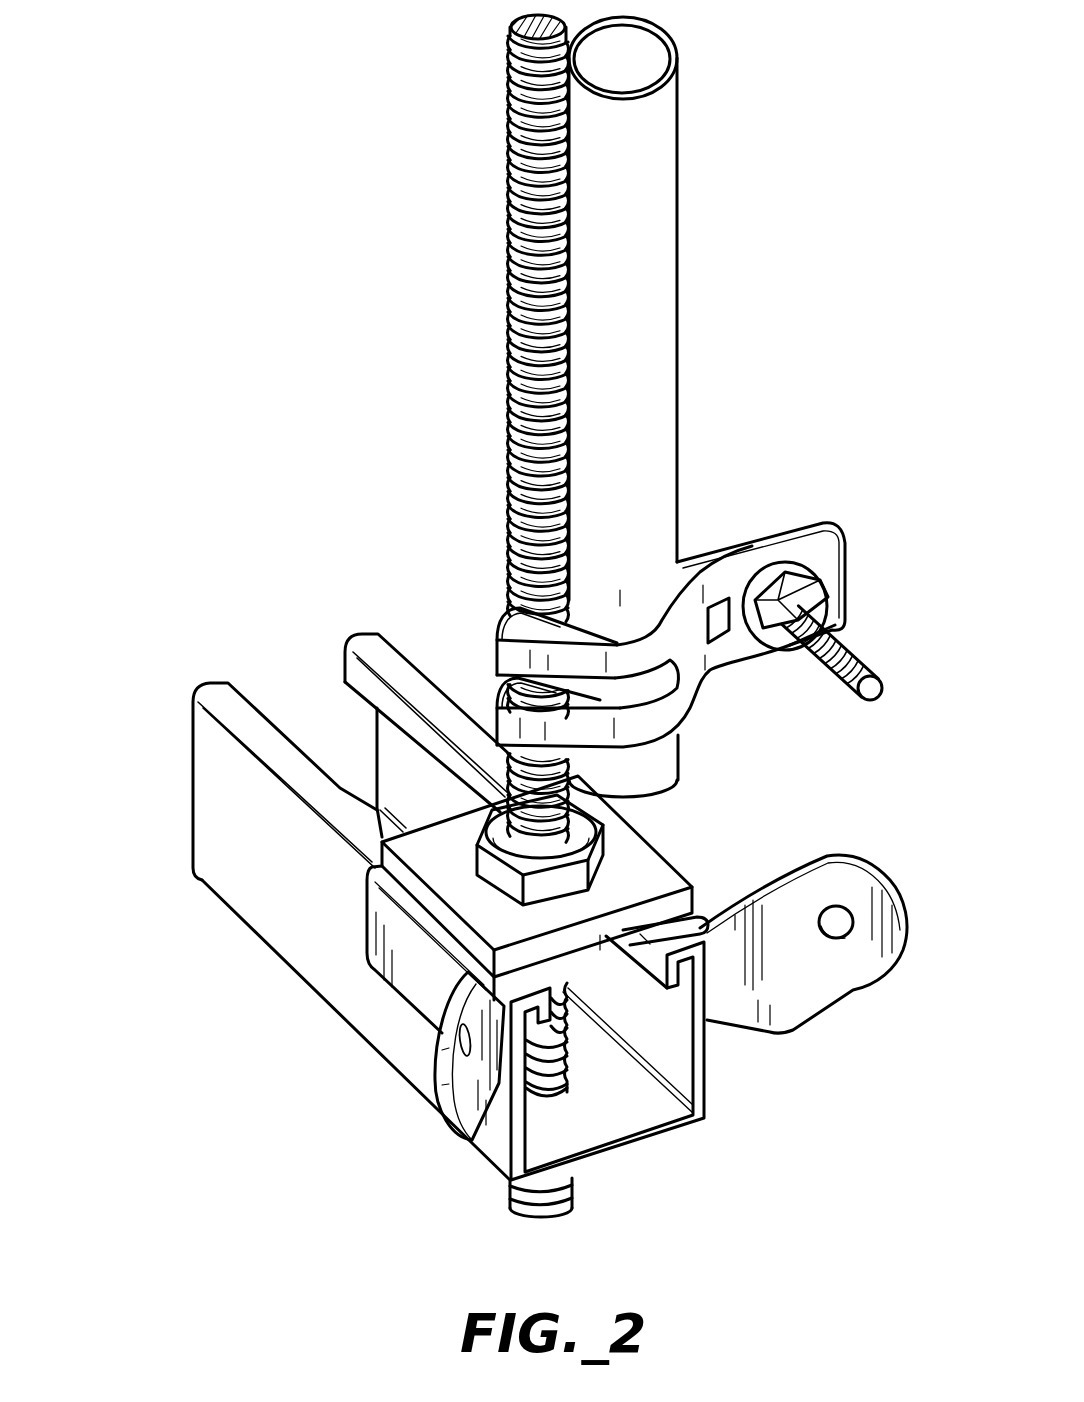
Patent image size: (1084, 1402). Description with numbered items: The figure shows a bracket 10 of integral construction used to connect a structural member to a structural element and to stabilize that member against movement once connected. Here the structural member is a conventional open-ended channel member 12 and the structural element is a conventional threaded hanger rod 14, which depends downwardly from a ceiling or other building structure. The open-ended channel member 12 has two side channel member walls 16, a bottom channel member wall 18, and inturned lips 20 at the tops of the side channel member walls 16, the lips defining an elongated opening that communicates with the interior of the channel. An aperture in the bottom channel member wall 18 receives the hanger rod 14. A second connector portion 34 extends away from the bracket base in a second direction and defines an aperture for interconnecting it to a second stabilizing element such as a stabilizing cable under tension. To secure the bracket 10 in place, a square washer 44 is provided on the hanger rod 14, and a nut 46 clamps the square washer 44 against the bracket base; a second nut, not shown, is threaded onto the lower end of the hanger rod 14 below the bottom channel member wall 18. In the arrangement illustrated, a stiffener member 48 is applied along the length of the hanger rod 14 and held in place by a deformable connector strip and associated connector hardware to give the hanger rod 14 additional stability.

The bracket 10 is at (320, 884).
The open-ended channel member 12 is at (314, 999).
The threaded hanger rod 14 is at (500, 192).
The side channel member walls 16 is at (393, 740).
The bottom channel member wall 18 is at (650, 1125).
The inturned lips 20 is at (368, 630).
The second connector portion 34 is at (846, 975).
The square washer 44 is at (650, 866).
The nut 46 is at (598, 853).
The stiffener member 48 is at (661, 347).